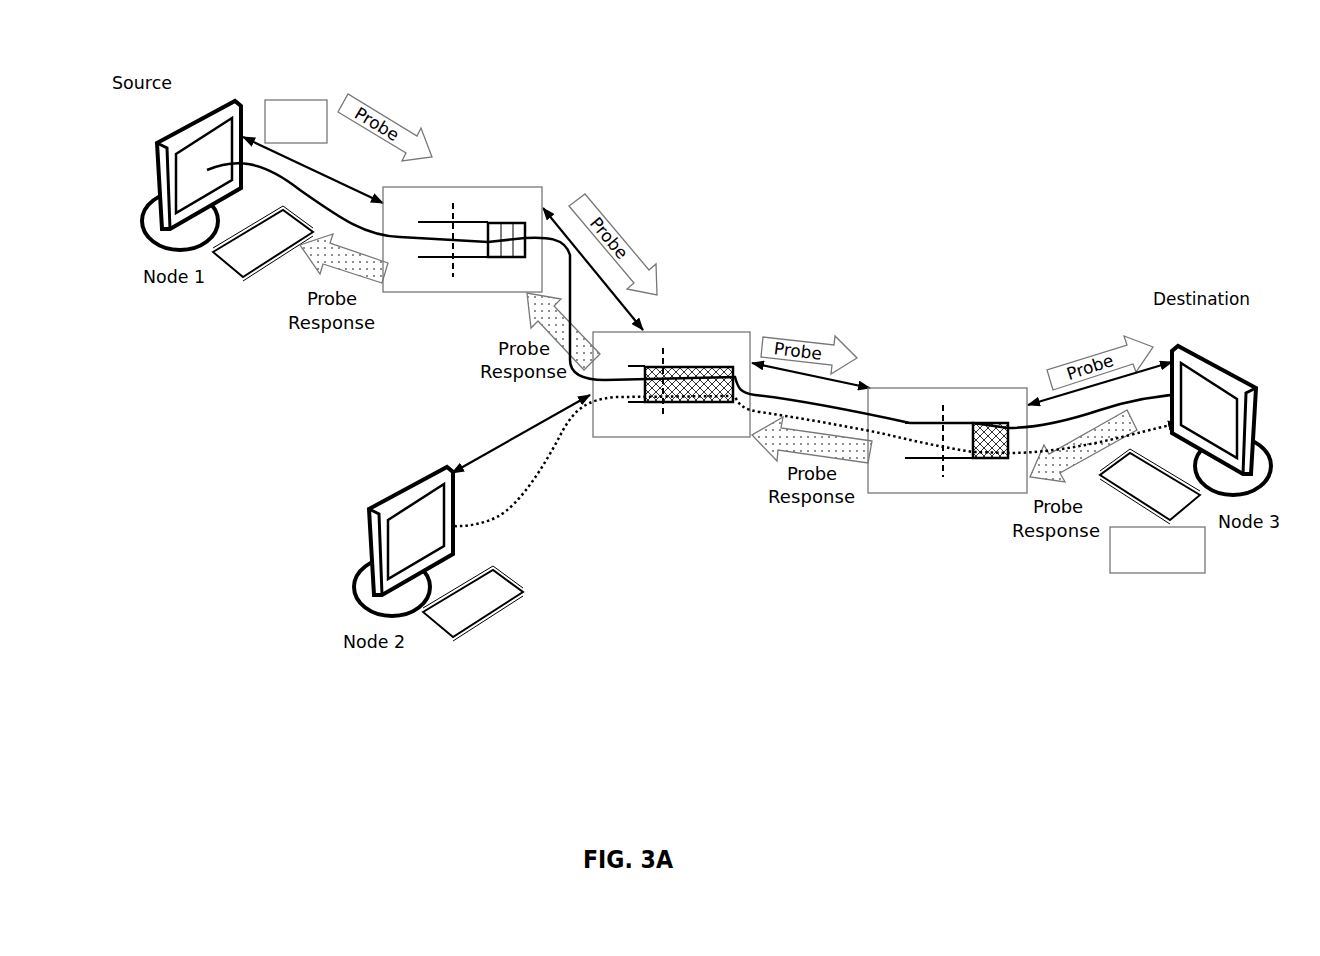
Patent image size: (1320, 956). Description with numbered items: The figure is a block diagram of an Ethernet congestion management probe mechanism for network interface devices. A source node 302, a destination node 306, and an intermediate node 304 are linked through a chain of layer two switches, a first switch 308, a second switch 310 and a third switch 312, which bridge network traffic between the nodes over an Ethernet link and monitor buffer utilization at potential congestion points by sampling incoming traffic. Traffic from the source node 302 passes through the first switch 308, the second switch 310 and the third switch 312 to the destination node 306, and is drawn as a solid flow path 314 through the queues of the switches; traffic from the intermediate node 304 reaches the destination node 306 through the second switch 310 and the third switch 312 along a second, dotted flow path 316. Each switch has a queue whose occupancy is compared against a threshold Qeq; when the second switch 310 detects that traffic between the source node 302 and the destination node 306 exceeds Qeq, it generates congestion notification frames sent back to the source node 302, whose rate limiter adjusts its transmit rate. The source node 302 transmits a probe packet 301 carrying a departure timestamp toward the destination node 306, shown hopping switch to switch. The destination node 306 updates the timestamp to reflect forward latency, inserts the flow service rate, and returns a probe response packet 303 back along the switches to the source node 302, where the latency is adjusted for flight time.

The probe packet 301 is at (313, 100).
The source node (node 1) 302 is at (225, 103).
The probe response packet 303 is at (1187, 571).
The intermediate node (node 2) 304 is at (408, 482).
The destination node (node 3) 306 is at (1222, 358).
The switch 1 308 is at (520, 187).
The switch 2 310 is at (734, 332).
The switch 3 312 is at (989, 388).
The data flow path from source to destination 314 is at (266, 167).
The data flow path from Node 2 to destination 316 is at (533, 485).